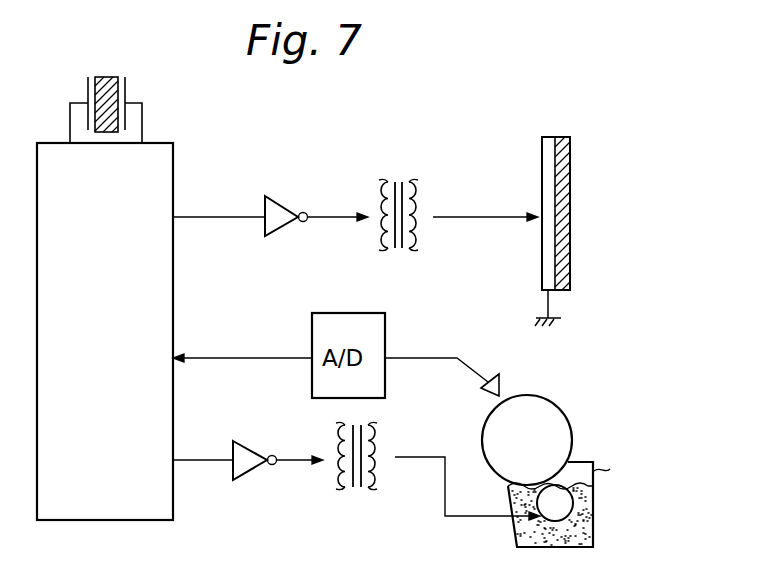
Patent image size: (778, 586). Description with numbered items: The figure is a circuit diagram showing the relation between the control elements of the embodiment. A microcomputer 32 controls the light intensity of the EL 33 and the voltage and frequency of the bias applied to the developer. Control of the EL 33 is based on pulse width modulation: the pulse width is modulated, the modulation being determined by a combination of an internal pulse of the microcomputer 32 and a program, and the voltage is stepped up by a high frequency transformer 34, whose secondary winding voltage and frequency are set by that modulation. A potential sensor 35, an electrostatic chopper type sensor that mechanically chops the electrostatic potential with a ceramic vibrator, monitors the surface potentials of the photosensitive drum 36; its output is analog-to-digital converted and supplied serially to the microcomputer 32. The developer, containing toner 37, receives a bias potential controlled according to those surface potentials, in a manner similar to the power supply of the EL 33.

The microcomputer (MCU) 32 is at (99, 519).
The EL 33 is at (545, 153).
The high frequency transformer (H.T) 34 is at (409, 181).
The potential sensor 35 is at (500, 377).
The photosensitive drum 36 is at (575, 418).
The toner 37 is at (595, 540).